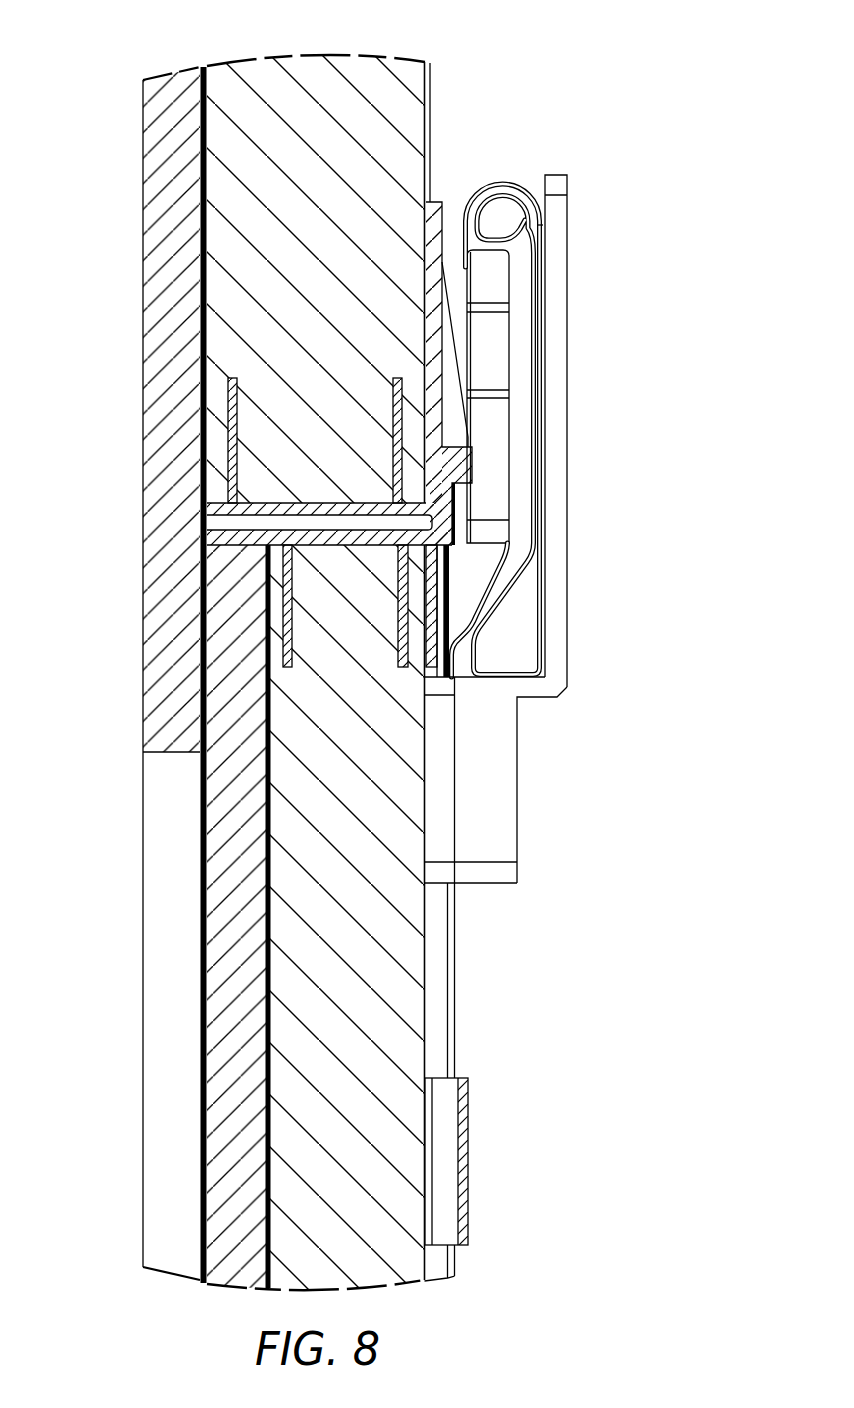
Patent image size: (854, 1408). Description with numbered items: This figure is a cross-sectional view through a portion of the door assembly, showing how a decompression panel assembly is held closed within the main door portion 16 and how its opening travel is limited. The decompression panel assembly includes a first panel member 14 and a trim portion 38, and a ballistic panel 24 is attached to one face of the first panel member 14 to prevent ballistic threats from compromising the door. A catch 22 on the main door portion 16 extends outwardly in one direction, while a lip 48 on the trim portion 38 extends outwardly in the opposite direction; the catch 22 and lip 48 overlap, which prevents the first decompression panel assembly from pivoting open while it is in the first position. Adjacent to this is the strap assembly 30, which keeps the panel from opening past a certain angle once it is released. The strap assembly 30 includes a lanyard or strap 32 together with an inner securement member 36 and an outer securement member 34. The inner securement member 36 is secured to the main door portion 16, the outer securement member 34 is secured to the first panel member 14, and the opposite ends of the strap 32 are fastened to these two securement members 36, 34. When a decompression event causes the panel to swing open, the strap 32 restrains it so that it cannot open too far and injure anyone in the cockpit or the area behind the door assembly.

The first panel member 14 is at (400, 733).
The main door portion 16 is at (380, 82).
The catch 22 is at (470, 492).
The ballistic panel 24 is at (173, 655).
The strap assembly 30 is at (604, 384).
The strap 32 is at (510, 180).
The outer securement member 34 is at (570, 208).
The inner securement member 36 is at (490, 342).
The trim portion 38 is at (449, 523).
The lip 48 is at (445, 513).